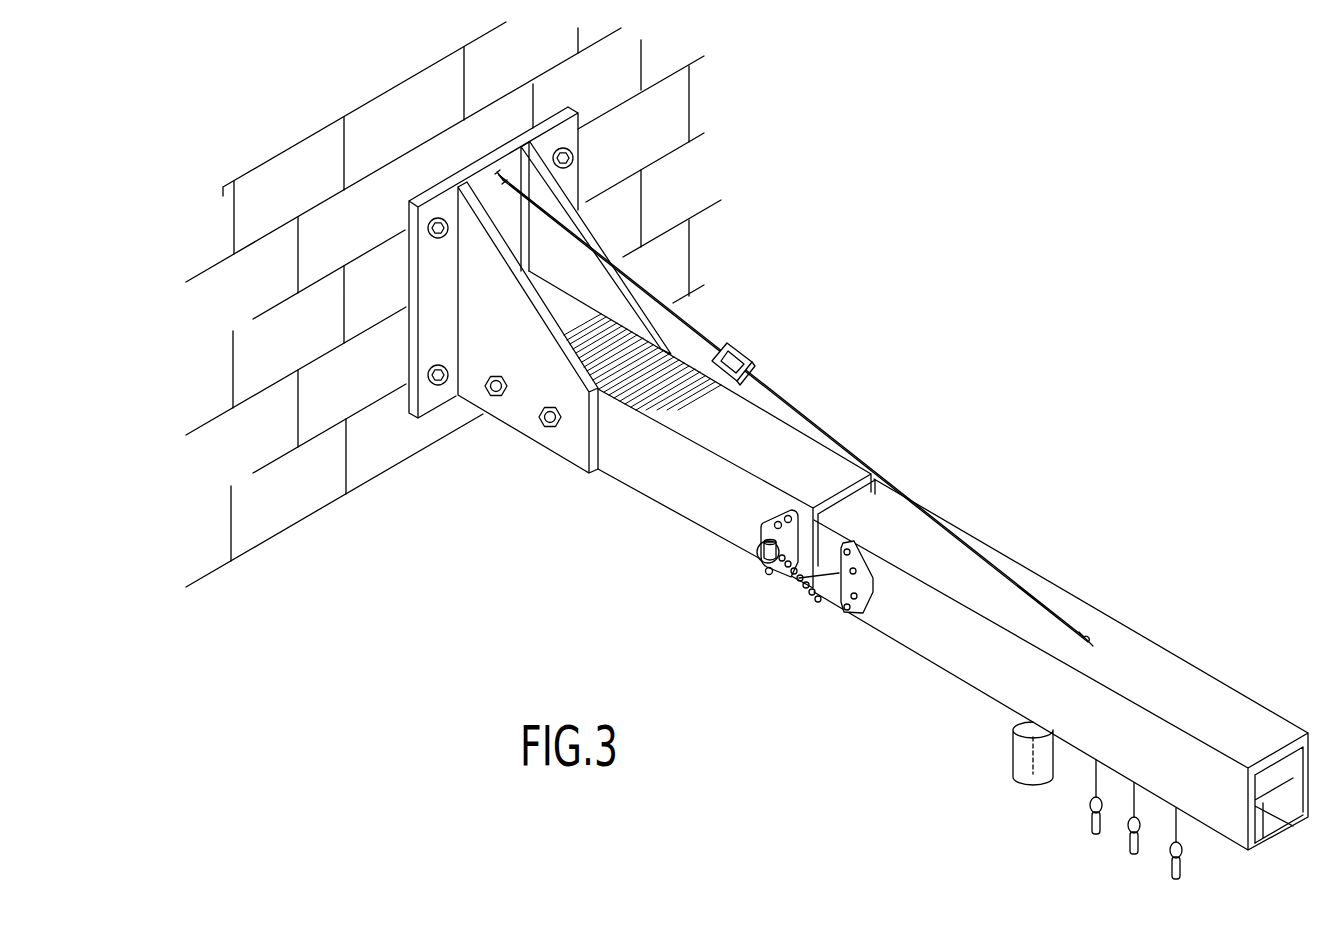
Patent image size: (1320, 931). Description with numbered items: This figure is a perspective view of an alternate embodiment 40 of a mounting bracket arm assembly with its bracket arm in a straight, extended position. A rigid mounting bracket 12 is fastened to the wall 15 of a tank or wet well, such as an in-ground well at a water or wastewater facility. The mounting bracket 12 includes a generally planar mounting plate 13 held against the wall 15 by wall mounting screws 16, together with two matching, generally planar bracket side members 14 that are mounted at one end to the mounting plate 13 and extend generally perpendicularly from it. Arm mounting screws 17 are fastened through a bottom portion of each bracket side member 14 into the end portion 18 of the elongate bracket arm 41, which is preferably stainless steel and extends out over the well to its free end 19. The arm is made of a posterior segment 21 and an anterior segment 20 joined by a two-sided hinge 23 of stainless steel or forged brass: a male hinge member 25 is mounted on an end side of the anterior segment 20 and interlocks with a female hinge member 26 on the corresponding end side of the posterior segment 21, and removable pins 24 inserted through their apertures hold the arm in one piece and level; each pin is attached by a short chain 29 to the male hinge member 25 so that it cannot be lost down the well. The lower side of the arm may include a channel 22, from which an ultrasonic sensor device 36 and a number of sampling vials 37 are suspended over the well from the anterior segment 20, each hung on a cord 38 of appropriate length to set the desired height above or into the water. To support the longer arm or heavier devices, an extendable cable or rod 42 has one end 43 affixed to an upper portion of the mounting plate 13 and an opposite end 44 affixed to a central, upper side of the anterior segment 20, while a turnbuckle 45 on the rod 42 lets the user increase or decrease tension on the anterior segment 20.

The mounting bracket 12 is at (601, 160).
The mounting plate 13 is at (433, 290).
The bracket side members 14 is at (544, 371).
The wall 15 is at (417, 133).
The wall mounting screws 16 is at (437, 218).
The arm mounting screws 17 is at (540, 421).
The end portion 18 is at (603, 330).
The free end 19 is at (1277, 737).
The anterior segment 20 is at (1164, 705).
The posterior segment 21 is at (771, 455).
The channel 22 is at (1266, 822).
The two-sided hinge 23 is at (776, 600).
The removable pins 24 is at (772, 554).
The male hinge member 25 is at (836, 583).
The female hinge member 26 is at (761, 532).
The short chain 29 is at (813, 604).
The ultrasonic sensor device 36 is at (1023, 773).
The sampling vials 37 is at (1170, 872).
The cord 38 is at (1181, 839).
The alternate embodiment of bracket arm assembly 40 is at (917, 423).
The elongate bracket arm 41 is at (993, 513).
The extendable cable or rod 42 is at (805, 416).
The one end of the cable or rod 43 is at (499, 172).
The opposite end of the rod 44 is at (1087, 637).
The turnbuckle 45 is at (741, 352).